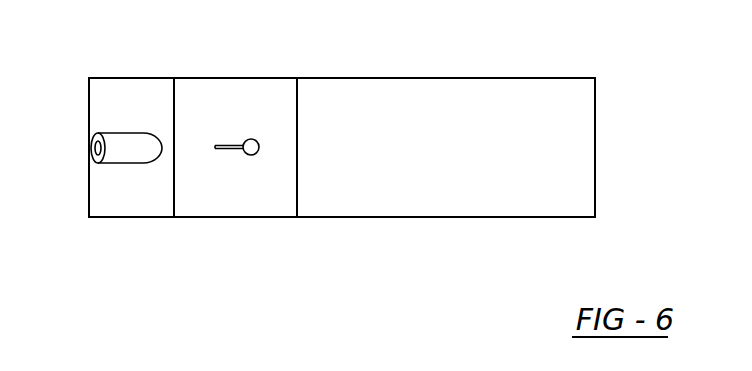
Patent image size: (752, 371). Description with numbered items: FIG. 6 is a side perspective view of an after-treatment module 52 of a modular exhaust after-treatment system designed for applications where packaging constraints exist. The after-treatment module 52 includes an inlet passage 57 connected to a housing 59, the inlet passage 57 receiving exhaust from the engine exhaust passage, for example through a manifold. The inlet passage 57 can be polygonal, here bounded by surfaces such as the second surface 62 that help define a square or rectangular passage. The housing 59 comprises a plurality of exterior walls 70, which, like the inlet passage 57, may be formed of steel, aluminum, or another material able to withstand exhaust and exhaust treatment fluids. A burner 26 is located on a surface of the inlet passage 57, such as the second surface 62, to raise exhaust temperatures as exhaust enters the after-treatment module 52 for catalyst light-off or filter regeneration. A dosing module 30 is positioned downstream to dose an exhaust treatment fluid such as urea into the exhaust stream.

The after-treatment module 52 is at (598, 104).
The second surface 62 is at (108, 102).
The inlet passage 57 is at (137, 197).
The housing 59 is at (423, 220).
The exterior walls 70 is at (242, 190).
The burner 26 is at (117, 165).
The dosing module 30 is at (249, 139).